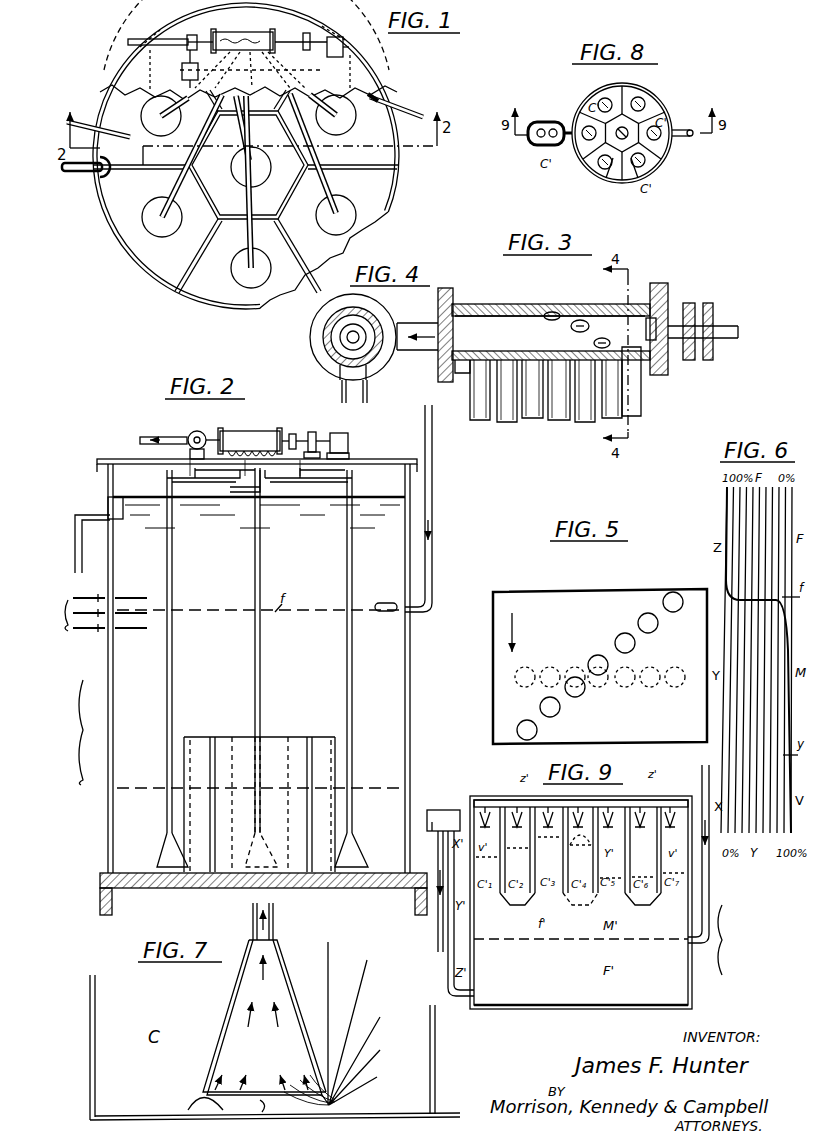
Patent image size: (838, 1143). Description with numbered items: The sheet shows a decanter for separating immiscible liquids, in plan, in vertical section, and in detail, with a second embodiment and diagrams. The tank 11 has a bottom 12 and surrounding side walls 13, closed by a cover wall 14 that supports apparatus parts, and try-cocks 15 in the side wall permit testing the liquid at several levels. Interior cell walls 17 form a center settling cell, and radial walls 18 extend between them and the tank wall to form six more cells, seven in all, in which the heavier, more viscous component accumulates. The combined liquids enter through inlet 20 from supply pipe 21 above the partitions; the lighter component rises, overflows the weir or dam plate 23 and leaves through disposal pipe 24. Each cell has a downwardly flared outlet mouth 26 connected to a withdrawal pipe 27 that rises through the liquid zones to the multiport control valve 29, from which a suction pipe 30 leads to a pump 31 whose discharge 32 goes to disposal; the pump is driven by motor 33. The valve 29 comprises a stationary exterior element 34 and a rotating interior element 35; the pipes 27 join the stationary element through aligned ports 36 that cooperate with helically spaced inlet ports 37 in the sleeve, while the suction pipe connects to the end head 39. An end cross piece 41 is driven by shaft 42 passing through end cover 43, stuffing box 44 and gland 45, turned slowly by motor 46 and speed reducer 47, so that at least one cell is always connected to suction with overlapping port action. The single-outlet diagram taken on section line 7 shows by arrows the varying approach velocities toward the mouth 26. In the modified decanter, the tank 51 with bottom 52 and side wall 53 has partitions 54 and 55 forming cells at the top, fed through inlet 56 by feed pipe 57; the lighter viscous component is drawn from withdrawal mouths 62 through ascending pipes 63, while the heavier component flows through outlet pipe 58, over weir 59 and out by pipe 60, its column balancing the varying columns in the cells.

In FIG. 1, the section line 7— 7 is at (172, 232).
In FIG. 2, the tank 11 is at (230, 670).
In FIG. 2, the bottom 12 is at (124, 872).
In FIG. 7, the bottom 12 is at (142, 1116).
In FIG. 1, the side walls 13 is at (138, 277).
In FIG. 2, the side walls 13 is at (114, 765).
In FIG. 7, the side walls 13 is at (96, 1070).
In FIG. 1, the cover wall 14 is at (365, 68).
In FIG. 2, the cover wall 14 is at (107, 459).
In FIG. 1, the try-cocks 15 is at (73, 121).
In FIG. 2, the try-cocks 15 is at (97, 613).
In FIG. 1, the interior cell walls 17 is at (296, 184).
In FIG. 2, the interior cell walls 17 is at (215, 744).
In FIG. 7, the interior cell walls 17 is at (430, 1050).
In FIG. 1, the radial walls 18 is at (198, 258).
In FIG. 2, the radial walls 18 is at (192, 744).
In FIG. 1, the decanter inlet 20 is at (374, 102).
In FIG. 2, the decanter inlet 20 is at (386, 597).
In FIG. 1, the supply pipe 21 is at (423, 117).
In FIG. 2, the supply pipe 21 is at (433, 545).
In FIG. 1, the weir or dam plate 23 is at (108, 162).
In FIG. 2, the weir or dam plate 23 is at (118, 498).
In FIG. 1, the disposal pipe 24 is at (80, 172).
In FIG. 2, the disposal pipe 24 is at (75, 572).
In FIG. 1, the outlet mouth 26 is at (265, 158).
In FIG. 2, the outlet mouth 26 is at (185, 860).
In FIG. 7, the outlet mouth 26 is at (268, 1100).
In FIG. 1, the withdrawal pipe 27 is at (250, 133).
In FIG. 4, the withdrawal pipe 27 is at (368, 392).
In FIG. 3, the withdrawal pipe 27 is at (555, 425).
In FIG. 2, the withdrawal pipe 27 is at (173, 631).
In FIG. 7, the withdrawal pipe 27 is at (275, 920).
In FIG. 1, the multiport control valve 29 is at (243, 32).
In FIG. 3, the multiport control valve 29 is at (494, 304).
In FIG. 2, the multiport control valve 29 is at (250, 431).
In FIG. 1, the suction pipe 30 is at (194, 34).
In FIG. 4, the suction pipe 30 is at (345, 342).
In FIG. 3, the suction pipe 30 is at (413, 323).
In FIG. 2, the suction pipe 30 is at (212, 438).
In FIG. 1, the pump 31 is at (190, 40).
In FIG. 1, the discharge 32 is at (135, 38).
In FIG. 2, the discharge 32 is at (146, 437).
In FIG. 1, the motor 33 is at (182, 75).
In FIG. 2, the motor 33 is at (197, 431).
In FIG. 4, the stationary exterior element 34 is at (330, 310).
In FIG. 3, the stationary exterior element 34 is at (533, 304).
In FIG. 4, the rotating interior element 35 is at (325, 330).
In FIG. 3, the rotating interior element 35 is at (555, 312).
In FIG. 5, the rotating interior element 35 is at (550, 603).
In FIG. 4, the ports 36 is at (340, 378).
In FIG. 3, the ports 36 is at (460, 375).
In FIG. 5, the ports 36 is at (675, 681).
In FIG. 3, the inlet ports 37 is at (572, 330).
In FIG. 5, the inlet ports 37 is at (640, 622).
In FIG. 3, the end head or cover 39 is at (446, 288).
In FIG. 3, the end cross piece 41 is at (643, 327).
In FIG. 3, the shaft 42 is at (730, 325).
In FIG. 2, the shaft 42 is at (292, 434).
In FIG. 3, the end cover or head 43 is at (662, 283).
In FIG. 3, the stuffing box 44 is at (688, 303).
In FIG. 3, the gland 45 is at (709, 303).
In FIG. 1, the motor 46 is at (337, 40).
In FIG. 2, the motor 46 is at (339, 433).
In FIG. 1, the speed reducer 47 is at (308, 33).
In FIG. 2, the speed reducer 47 is at (312, 432).
In FIG. 9, the tank 51 is at (735, 940).
In FIG. 9, the bottom 52 is at (548, 1005).
In FIG. 8, the side wall 53 is at (660, 163).
In FIG. 9, the side wall 53 is at (475, 927).
In FIG. 8, the partitions 54 is at (626, 112).
In FIG. 9, the partitions 54 is at (580, 898).
In FIG. 8, the partitions 55 is at (608, 174).
In FIG. 9, the partitions 55 is at (580, 864).
In FIG. 9, the inlet 56 is at (688, 940).
In FIG. 8, the feed pipe 57 is at (672, 130).
In FIG. 9, the feed pipe 57 is at (710, 890).
In FIG. 9, the outlet pipe 58 is at (478, 992).
In FIG. 9, the weir 59 is at (448, 812).
In FIG. 9, the pipe 60 is at (437, 946).
In FIG. 8, the withdrawal mouths 62 is at (645, 105).
In FIG. 9, the withdrawal mouths 62 is at (517, 828).
In FIG. 9, the ascending pipes 63 is at (503, 800).